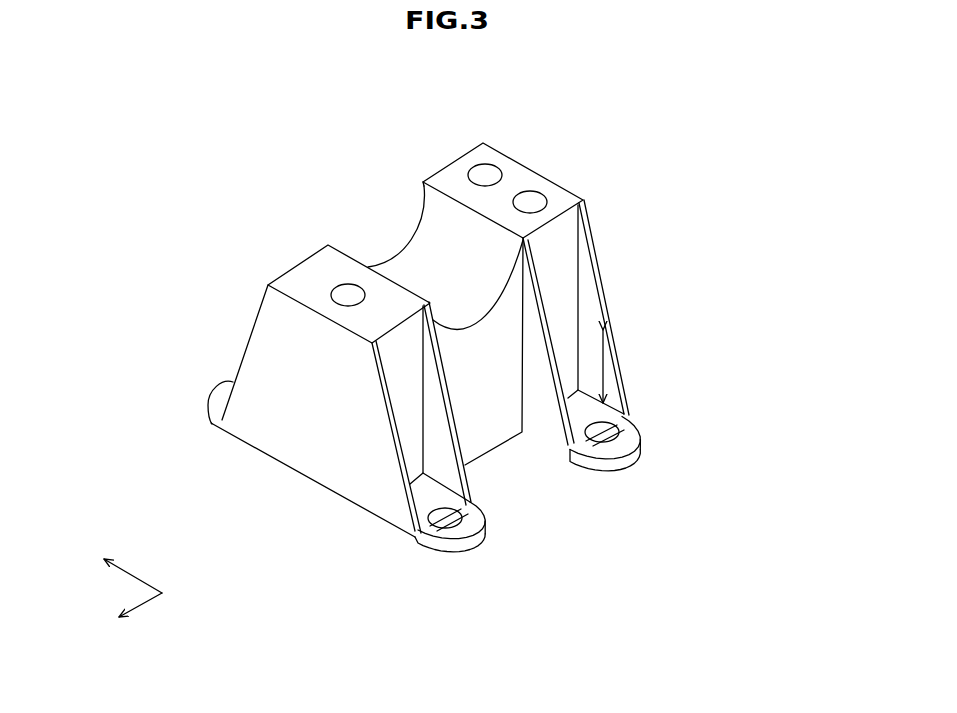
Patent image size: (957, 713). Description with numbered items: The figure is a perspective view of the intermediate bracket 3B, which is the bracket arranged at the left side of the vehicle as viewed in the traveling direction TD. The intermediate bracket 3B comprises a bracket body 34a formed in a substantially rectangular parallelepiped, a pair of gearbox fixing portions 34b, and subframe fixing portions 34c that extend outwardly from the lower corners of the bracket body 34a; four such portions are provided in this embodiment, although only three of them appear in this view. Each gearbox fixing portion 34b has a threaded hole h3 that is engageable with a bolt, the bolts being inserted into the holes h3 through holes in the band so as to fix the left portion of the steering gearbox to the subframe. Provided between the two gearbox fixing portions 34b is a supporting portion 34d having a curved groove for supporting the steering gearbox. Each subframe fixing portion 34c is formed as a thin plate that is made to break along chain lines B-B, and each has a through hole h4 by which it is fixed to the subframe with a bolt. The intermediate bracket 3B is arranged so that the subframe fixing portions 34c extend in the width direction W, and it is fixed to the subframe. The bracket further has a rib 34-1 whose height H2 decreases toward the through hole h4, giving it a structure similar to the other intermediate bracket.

The intermediate bracket 3B is at (530, 138).
The bracket body 34a is at (312, 466).
The gearbox fixing portion 34b is at (597, 139).
The subframe fixing portion 34c is at (217, 401).
The supporting portion 34d is at (413, 242).
The rib 34-1 is at (600, 268).
The threaded hole h3 is at (347, 290).
The through hole h4 is at (463, 517).
The chain line B is at (626, 418).
The height H2 is at (606, 370).
The width direction W is at (123, 568).
The traveling direction TD is at (126, 614).